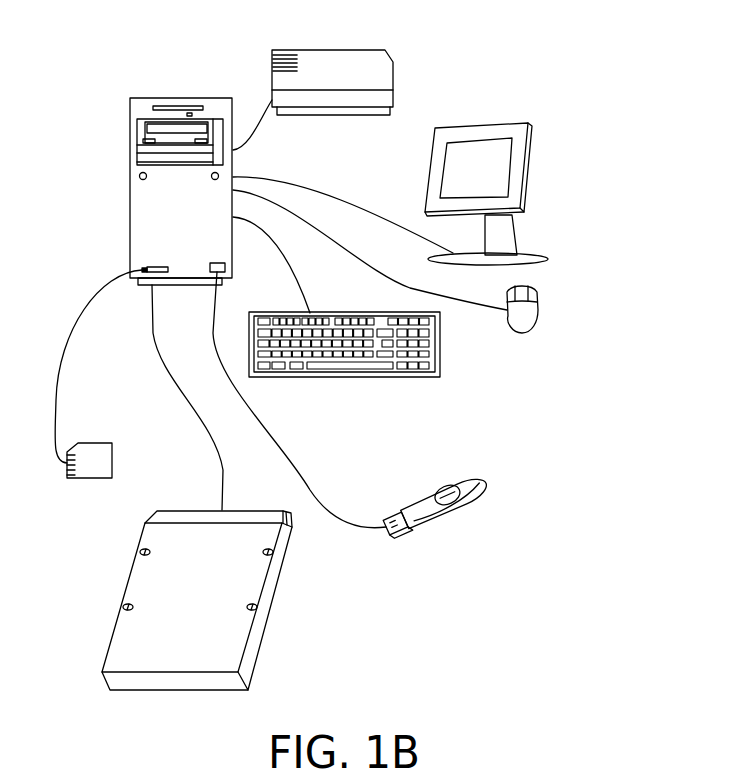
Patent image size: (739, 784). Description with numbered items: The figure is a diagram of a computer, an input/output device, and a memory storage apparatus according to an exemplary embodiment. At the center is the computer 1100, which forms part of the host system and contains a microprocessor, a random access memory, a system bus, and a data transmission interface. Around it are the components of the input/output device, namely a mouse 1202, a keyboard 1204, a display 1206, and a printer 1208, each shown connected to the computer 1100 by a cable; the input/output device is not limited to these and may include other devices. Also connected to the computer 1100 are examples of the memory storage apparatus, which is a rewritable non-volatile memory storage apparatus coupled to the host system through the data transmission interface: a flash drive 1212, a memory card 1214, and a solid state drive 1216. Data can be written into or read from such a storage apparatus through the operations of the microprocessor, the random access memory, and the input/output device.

The computer 1100 is at (185, 97).
The mouse 1202 is at (538, 312).
The keyboard 1204 is at (442, 355).
The display 1206 is at (488, 122).
The printer 1208 is at (327, 50).
The flash drive 1212 is at (433, 492).
The memory card 1214 is at (112, 453).
The solid state drive (SSD) 1216 is at (248, 494).